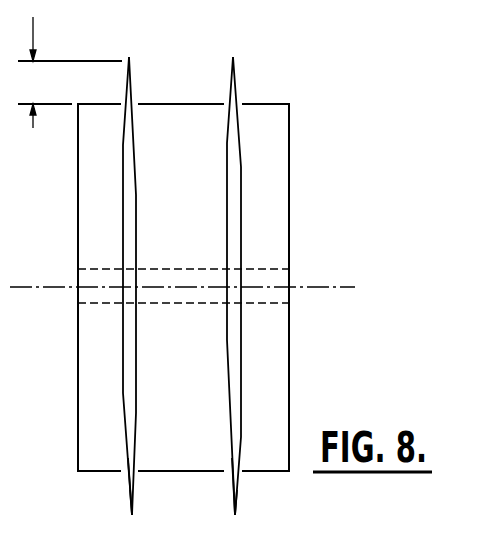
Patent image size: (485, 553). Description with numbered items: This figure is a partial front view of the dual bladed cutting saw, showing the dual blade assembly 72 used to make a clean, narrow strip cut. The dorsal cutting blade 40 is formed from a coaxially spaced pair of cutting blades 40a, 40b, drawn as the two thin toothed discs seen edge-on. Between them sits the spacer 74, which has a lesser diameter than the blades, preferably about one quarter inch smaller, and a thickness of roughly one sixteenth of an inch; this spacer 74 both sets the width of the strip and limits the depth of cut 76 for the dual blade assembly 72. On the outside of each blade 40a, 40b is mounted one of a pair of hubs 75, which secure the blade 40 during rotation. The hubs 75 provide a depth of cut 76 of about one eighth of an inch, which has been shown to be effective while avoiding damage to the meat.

The dorsal cutting blade 40 is at (305, 125).
The cutting blade 40a is at (128, 487).
The cutting blade 40b is at (237, 487).
The dual blade assembly 72 is at (158, 78).
The spacer 74 is at (185, 118).
The hubs 75 is at (95, 230).
The depth of cut 76 is at (70, 72).